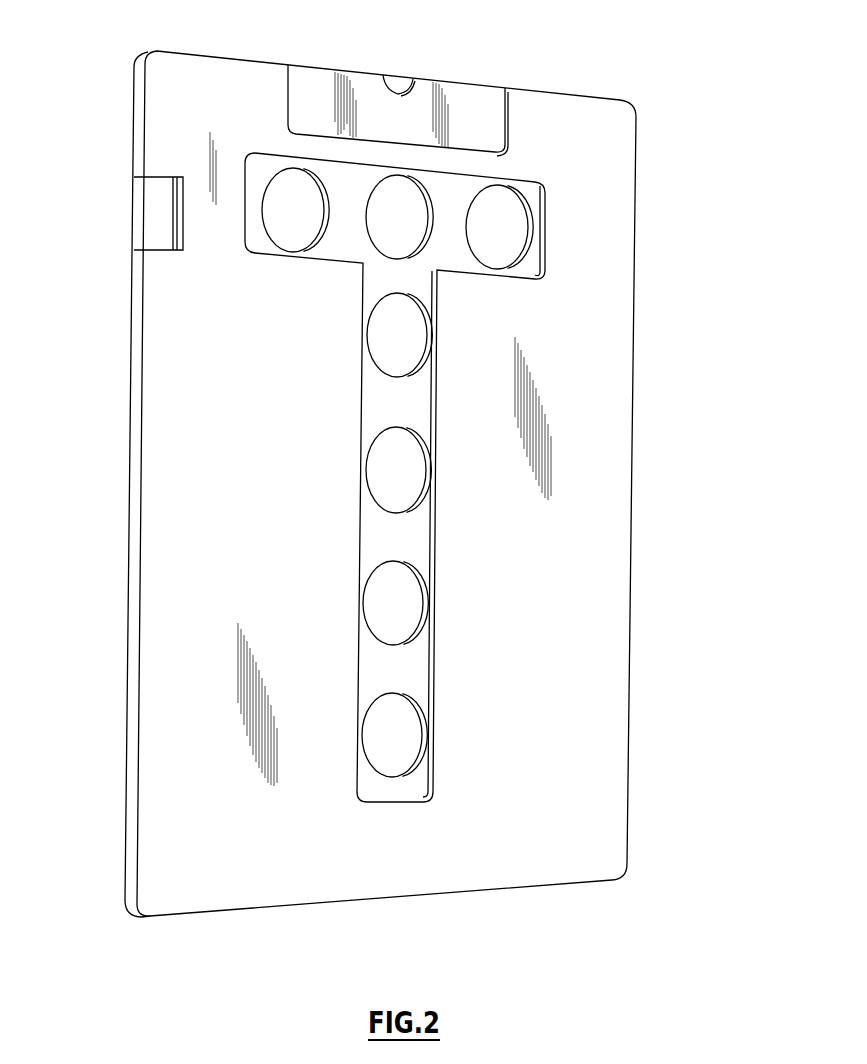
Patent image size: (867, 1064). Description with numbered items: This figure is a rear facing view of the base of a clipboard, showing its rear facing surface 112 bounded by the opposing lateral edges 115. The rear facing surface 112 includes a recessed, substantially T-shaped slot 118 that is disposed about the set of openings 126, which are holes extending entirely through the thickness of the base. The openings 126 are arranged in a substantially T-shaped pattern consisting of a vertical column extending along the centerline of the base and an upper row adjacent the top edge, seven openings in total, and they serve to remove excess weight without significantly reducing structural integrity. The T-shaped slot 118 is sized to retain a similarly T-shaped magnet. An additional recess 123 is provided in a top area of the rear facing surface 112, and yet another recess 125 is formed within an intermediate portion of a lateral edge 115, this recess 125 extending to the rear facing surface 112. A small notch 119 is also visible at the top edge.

The rear facing surface 112 is at (572, 528).
The lateral edge 115 is at (160, 547).
The T-shaped slot 118 is at (332, 178).
The notch 119 is at (397, 80).
The additional recess 123 is at (465, 107).
The recess 125 is at (158, 197).
The openings 126 is at (503, 230).